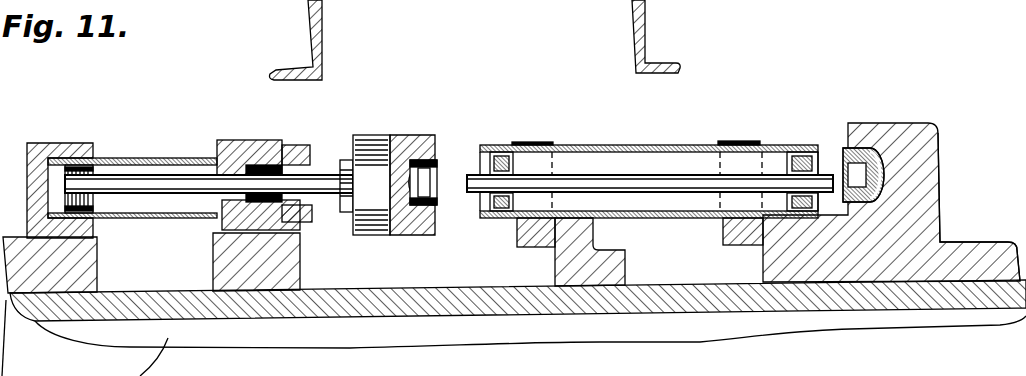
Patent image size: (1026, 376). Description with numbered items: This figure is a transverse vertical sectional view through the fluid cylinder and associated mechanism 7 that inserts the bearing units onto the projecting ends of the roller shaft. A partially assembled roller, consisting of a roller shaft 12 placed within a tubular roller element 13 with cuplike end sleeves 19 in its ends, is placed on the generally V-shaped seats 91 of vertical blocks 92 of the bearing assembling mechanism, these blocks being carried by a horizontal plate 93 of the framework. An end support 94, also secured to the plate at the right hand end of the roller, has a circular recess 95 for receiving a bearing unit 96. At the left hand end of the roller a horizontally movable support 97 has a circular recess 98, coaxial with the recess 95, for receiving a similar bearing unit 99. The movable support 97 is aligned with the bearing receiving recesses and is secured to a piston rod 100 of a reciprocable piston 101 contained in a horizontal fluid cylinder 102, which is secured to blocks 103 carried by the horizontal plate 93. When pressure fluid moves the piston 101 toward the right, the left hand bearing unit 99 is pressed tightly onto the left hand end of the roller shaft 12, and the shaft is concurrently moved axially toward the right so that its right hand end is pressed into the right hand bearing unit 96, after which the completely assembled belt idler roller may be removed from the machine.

The fluid cylinder and associated mechanism 7 is at (904, 124).
The roller shaft 12 is at (668, 173).
The tubular roller element 13 is at (582, 148).
The end sleeve 19 is at (517, 163).
The V-shaped seat 91 is at (557, 219).
The vertical block 92 is at (524, 233).
The horizontal plate 93 is at (670, 302).
The end support 94 is at (941, 168).
The circular recess 95 is at (868, 150).
The bearing unit 96 is at (843, 150).
The horizontally movable support 97 is at (381, 136).
The circular recess 98 is at (413, 135).
The bearing unit 99 is at (440, 160).
The piston rod 100 is at (326, 168).
The reciprocable piston 101 is at (93, 150).
The horizontal fluid cylinder 102 is at (155, 153).
The block 103 is at (213, 252).